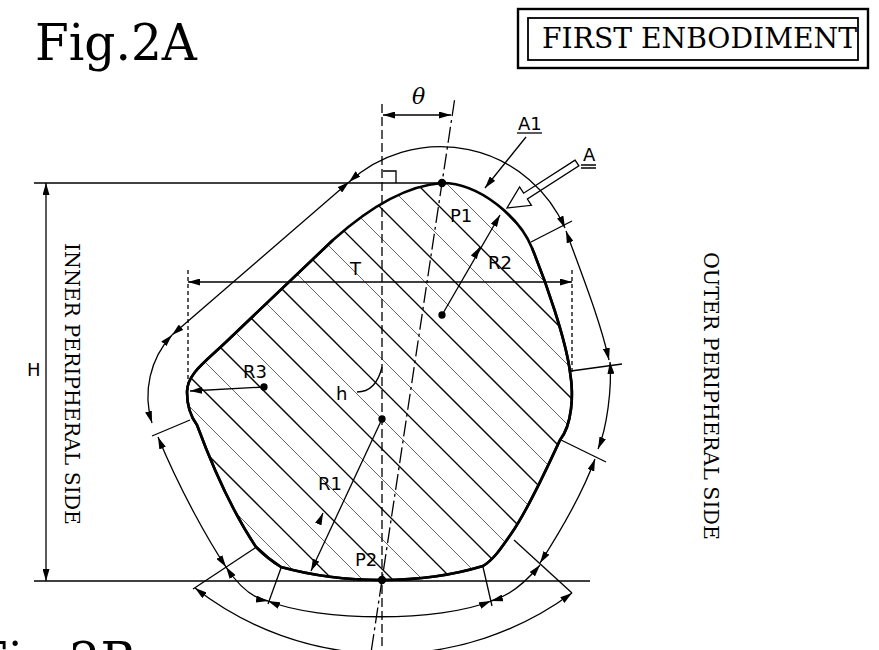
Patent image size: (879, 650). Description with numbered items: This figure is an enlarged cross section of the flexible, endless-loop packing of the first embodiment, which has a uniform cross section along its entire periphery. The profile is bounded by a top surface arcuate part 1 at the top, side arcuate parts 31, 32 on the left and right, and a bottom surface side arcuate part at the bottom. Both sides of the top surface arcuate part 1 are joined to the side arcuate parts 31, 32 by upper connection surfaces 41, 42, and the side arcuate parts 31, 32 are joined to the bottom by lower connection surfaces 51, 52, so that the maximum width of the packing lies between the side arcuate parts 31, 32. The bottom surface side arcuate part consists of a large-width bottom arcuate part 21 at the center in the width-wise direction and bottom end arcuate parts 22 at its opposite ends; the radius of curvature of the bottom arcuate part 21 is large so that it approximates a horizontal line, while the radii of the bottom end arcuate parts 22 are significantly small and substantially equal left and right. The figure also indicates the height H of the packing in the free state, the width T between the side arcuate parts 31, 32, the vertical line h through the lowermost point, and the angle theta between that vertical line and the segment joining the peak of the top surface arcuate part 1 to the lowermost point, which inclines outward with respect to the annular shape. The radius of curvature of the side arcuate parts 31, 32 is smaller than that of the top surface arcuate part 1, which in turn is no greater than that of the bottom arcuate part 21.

The top surface arcuate part 1 is at (439, 370).
The upper connection surface 41 is at (260, 262).
The upper connection surface 42 is at (588, 301).
The side arcuate part 31 is at (160, 385).
The side arcuate part 32 is at (612, 412).
The lower connection surface 51 is at (199, 496).
The lower connection surface 52 is at (565, 501).
The bottom arcuate part 21 is at (380, 591).
The bottom end arcuate parts 22 is at (382, 567).